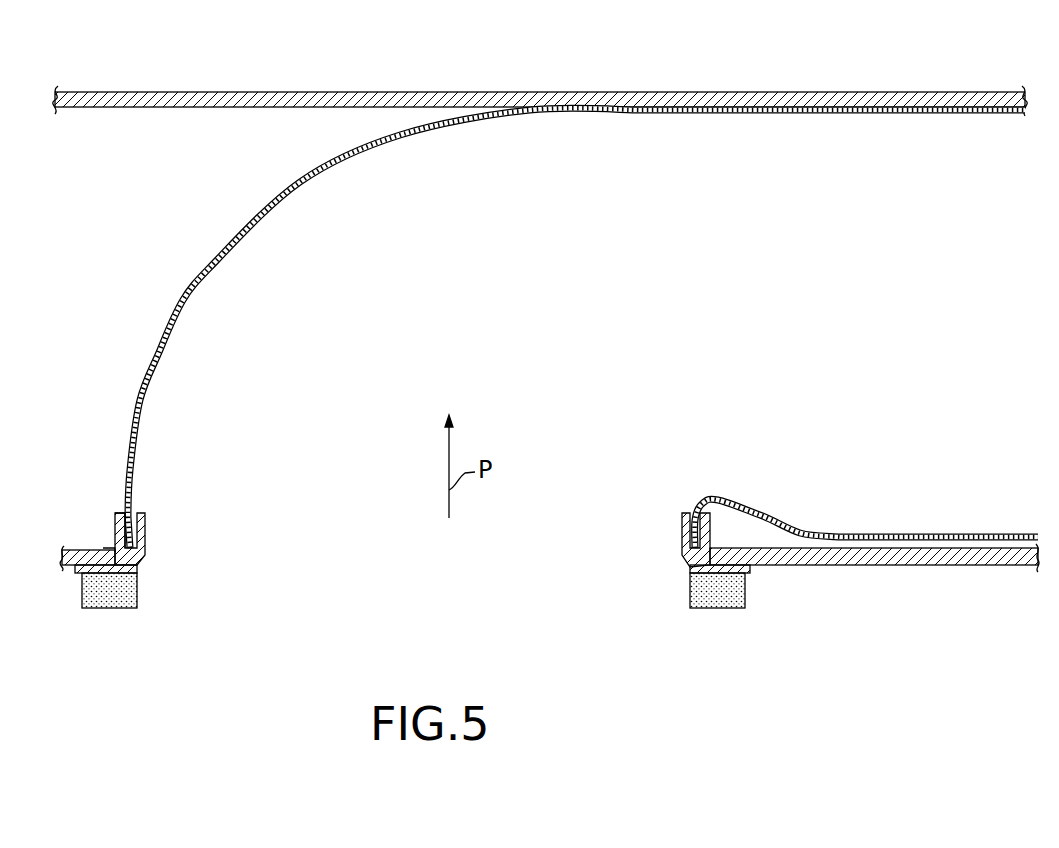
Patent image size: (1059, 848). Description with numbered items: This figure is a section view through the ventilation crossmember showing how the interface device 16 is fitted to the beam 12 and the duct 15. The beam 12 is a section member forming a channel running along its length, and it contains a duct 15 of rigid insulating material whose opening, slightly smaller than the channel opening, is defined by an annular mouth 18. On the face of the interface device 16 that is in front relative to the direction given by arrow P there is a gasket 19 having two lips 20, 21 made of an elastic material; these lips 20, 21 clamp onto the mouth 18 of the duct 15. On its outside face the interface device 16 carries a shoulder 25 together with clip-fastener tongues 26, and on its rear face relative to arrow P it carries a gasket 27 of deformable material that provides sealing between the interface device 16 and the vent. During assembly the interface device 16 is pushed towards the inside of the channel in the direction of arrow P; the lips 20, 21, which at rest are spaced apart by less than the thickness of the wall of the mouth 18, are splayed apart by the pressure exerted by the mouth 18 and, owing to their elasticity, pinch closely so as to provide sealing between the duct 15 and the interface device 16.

The beam 12 is at (305, 100).
The duct 15 is at (219, 255).
The interface device 16 is at (120, 625).
The annular mouth 18 is at (142, 497).
The gasket 19 is at (142, 568).
The lip 20 is at (145, 517).
The lip 21 is at (112, 513).
The shoulder 25 is at (733, 550).
The clip-fastener tongue 26 is at (103, 540).
The gasket 27 is at (98, 595).